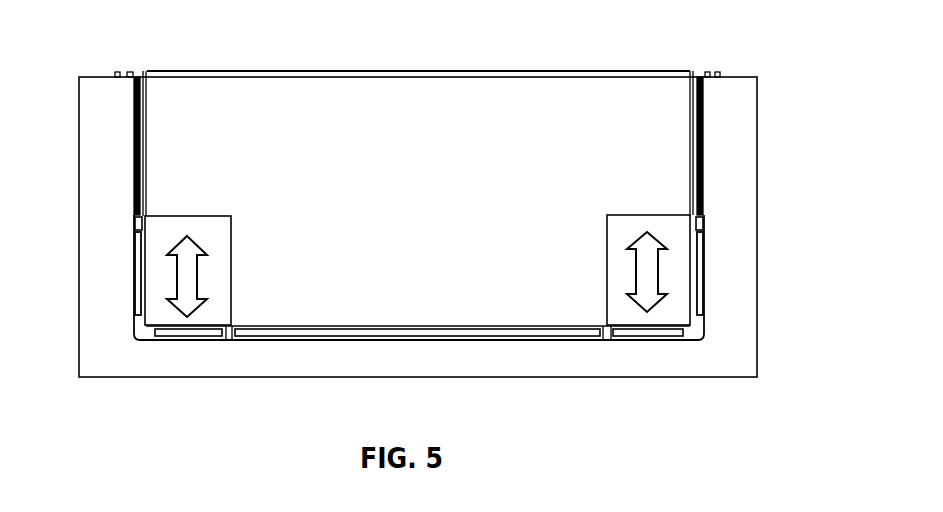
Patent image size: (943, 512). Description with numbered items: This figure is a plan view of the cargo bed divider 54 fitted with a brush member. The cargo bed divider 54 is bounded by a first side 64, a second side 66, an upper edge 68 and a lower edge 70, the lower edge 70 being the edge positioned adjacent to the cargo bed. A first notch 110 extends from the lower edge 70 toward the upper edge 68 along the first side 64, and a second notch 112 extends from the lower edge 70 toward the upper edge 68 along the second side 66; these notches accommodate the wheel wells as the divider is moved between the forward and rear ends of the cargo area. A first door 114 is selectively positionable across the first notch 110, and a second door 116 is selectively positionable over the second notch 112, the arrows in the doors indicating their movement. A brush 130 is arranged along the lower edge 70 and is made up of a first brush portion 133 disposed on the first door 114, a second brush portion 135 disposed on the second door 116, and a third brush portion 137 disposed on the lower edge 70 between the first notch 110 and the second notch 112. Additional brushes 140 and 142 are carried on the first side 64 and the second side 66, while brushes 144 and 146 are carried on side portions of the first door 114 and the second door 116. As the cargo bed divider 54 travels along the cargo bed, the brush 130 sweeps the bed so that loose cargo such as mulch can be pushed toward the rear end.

The cargo bed divider 54 is at (230, 70).
The upper edge 68 is at (386, 71).
The first side 64 is at (146, 112).
The second side 66 is at (690, 153).
The brush 140 is at (141, 184).
The brush 142 is at (696, 197).
The brush 144 is at (141, 273).
The brush 146 is at (697, 267).
The first notch 110 is at (232, 272).
The second notch 112 is at (607, 245).
The first door 114 is at (168, 236).
The second door 116 is at (627, 228).
The brush 130 is at (533, 352).
The lower edge 70 is at (425, 330).
The first brush portion 133 is at (193, 337).
The third brush portion 137 is at (330, 337).
The second brush portion 135 is at (672, 337).